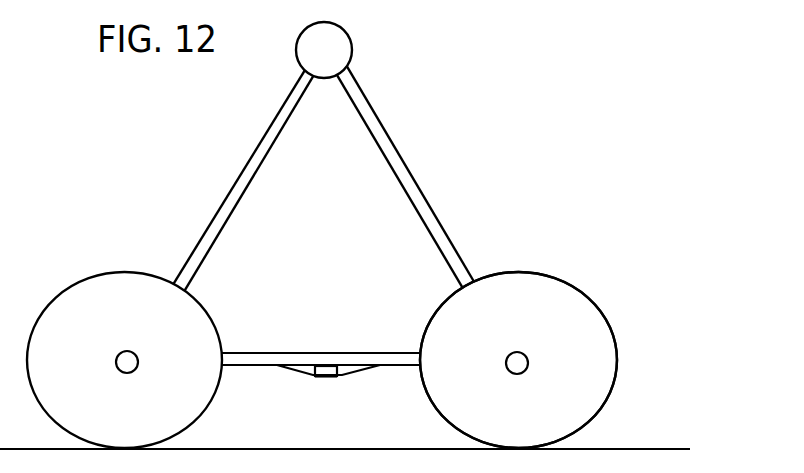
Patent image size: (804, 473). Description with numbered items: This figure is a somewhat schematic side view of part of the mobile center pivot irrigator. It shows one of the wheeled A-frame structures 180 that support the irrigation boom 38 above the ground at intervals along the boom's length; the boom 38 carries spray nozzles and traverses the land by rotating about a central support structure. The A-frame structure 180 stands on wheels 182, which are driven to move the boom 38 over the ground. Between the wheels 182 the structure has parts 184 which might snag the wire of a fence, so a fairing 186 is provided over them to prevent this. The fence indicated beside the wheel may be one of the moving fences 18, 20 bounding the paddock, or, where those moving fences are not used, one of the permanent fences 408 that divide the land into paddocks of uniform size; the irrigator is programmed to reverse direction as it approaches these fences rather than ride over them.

The irrigation boom 38 is at (344, 53).
The A-frame structure 180 is at (415, 178).
The wheels 182 is at (545, 280).
The parts between the wheels 184 is at (323, 366).
The fairing 186 is at (350, 376).
The fence 18 is at (396, 360).
The fence 20 is at (396, 360).
The permanent fences 408 is at (628, 366).